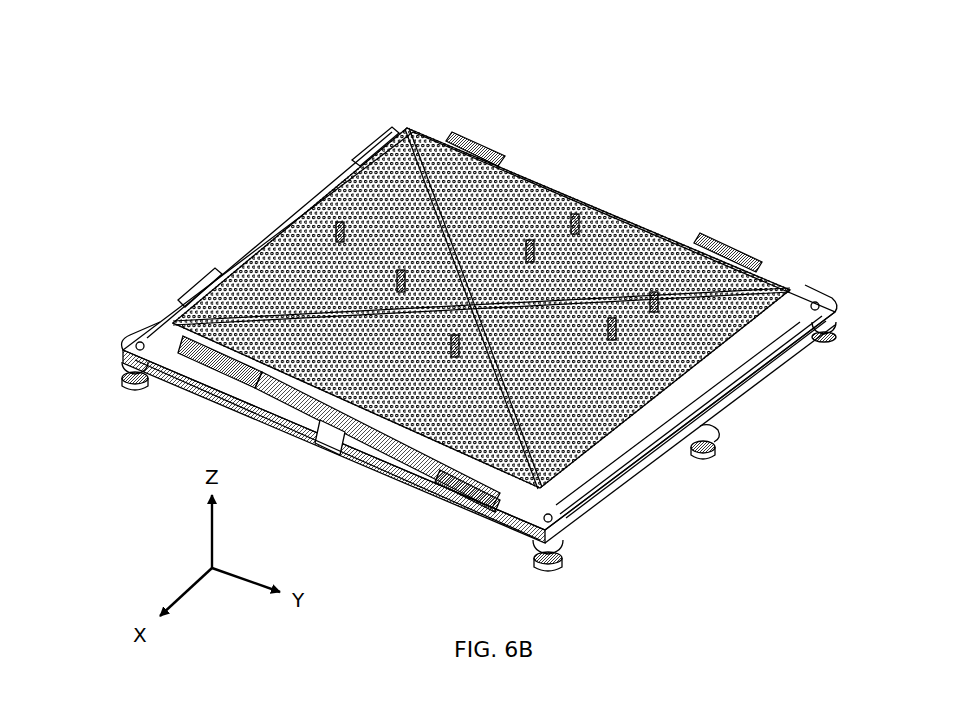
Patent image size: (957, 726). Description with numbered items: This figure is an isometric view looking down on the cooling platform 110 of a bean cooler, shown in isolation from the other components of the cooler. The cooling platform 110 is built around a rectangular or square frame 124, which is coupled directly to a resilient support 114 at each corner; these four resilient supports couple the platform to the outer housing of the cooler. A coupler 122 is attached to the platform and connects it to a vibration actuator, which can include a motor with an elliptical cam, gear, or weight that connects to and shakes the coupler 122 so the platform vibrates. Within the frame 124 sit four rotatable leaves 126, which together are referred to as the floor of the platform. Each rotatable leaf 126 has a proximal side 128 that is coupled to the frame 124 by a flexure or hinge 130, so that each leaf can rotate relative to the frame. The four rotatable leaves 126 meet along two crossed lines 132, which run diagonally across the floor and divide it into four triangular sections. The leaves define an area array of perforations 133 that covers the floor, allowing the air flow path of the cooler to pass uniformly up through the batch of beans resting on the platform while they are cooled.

The cooling platform 110 is at (562, 104).
The resilient support 114 is at (145, 388).
The coupler 122 is at (703, 458).
The frame 124 is at (750, 372).
The rotatable leaf 126 is at (360, 192).
The proximal side 128 is at (405, 447).
The flexure or hinge 130 is at (448, 478).
The crossed lines 132 is at (455, 237).
The perforations 133 is at (538, 205).